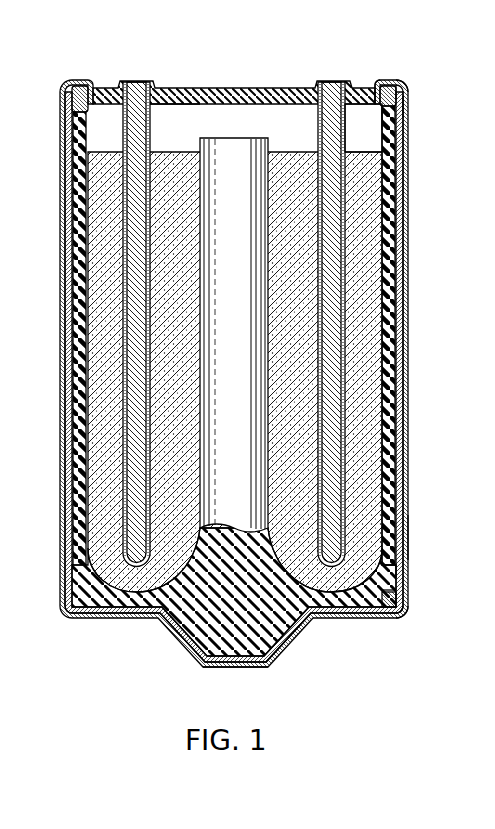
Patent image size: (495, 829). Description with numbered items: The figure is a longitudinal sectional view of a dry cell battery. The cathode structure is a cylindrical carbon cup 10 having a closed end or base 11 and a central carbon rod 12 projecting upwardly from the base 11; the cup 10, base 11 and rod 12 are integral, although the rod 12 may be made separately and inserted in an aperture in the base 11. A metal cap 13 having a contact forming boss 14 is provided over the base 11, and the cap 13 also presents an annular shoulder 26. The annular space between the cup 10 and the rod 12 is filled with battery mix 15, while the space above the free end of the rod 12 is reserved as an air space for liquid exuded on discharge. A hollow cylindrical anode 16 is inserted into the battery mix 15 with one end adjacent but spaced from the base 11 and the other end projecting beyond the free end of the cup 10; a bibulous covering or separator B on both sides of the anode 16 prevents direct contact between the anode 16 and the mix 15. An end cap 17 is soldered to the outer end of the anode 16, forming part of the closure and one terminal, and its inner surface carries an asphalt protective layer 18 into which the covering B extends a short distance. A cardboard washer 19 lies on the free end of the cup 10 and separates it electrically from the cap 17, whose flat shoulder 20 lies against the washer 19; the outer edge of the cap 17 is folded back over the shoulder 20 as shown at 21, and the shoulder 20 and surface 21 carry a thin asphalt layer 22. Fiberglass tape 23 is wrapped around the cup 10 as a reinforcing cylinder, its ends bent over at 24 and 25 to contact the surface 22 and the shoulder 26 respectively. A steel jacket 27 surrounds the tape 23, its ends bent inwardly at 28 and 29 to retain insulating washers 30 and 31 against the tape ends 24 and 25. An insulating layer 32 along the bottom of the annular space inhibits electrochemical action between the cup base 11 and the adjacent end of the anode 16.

The carbon cup 10 is at (401, 502).
The cup base 11 is at (282, 637).
The central carbon rod 12 is at (212, 142).
The metal cap 13 is at (317, 627).
The contact forming boss 14 is at (234, 669).
The battery mix 15 is at (376, 369).
The hollow cylindrical anode 16 is at (340, 412).
The end cap 17 is at (263, 88).
The protective layer 18 is at (266, 105).
The washer 19 is at (396, 118).
The flat shoulder 20 is at (383, 105).
The folded-back edge surface 21 is at (404, 103).
The asphalt layer 22 is at (388, 87).
The fiberglass tape 23 is at (409, 339).
The tape end 24 is at (374, 98).
The tape end 25 is at (384, 609).
The annular shoulder 26 is at (396, 591).
The steel jacket 27 is at (409, 536).
The jacket end section 28 is at (400, 82).
The jacket end section 29 is at (408, 617).
The insulating washer 30 is at (401, 92).
The insulating washer 31 is at (401, 612).
The insulating layer 32 is at (398, 574).
The bibulous covering B is at (389, 458).